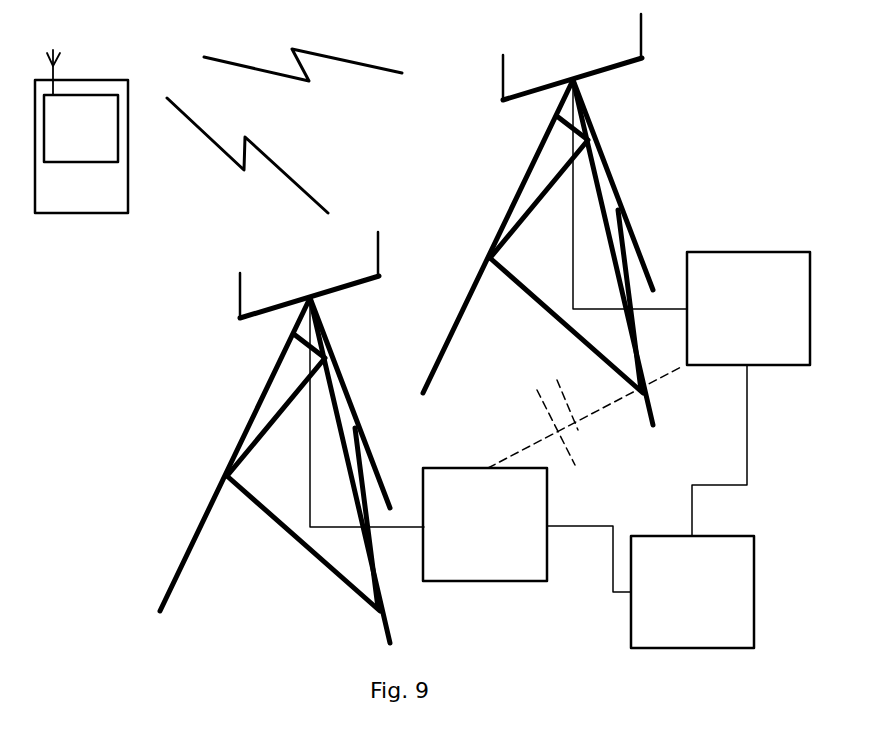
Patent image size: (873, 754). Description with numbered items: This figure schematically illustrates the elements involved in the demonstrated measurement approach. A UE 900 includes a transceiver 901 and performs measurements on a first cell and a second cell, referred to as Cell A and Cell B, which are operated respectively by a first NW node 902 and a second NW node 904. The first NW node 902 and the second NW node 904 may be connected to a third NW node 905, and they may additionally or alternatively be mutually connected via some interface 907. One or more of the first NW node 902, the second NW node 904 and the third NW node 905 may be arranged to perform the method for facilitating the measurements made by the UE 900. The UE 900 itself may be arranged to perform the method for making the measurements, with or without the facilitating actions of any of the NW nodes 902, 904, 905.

The UE 900 is at (108, 193).
The transceiver 901 is at (112, 128).
The first NW node 902 is at (748, 352).
The second NW node 904 is at (478, 559).
The third NW node 905 is at (677, 633).
The interface 907 is at (573, 428).